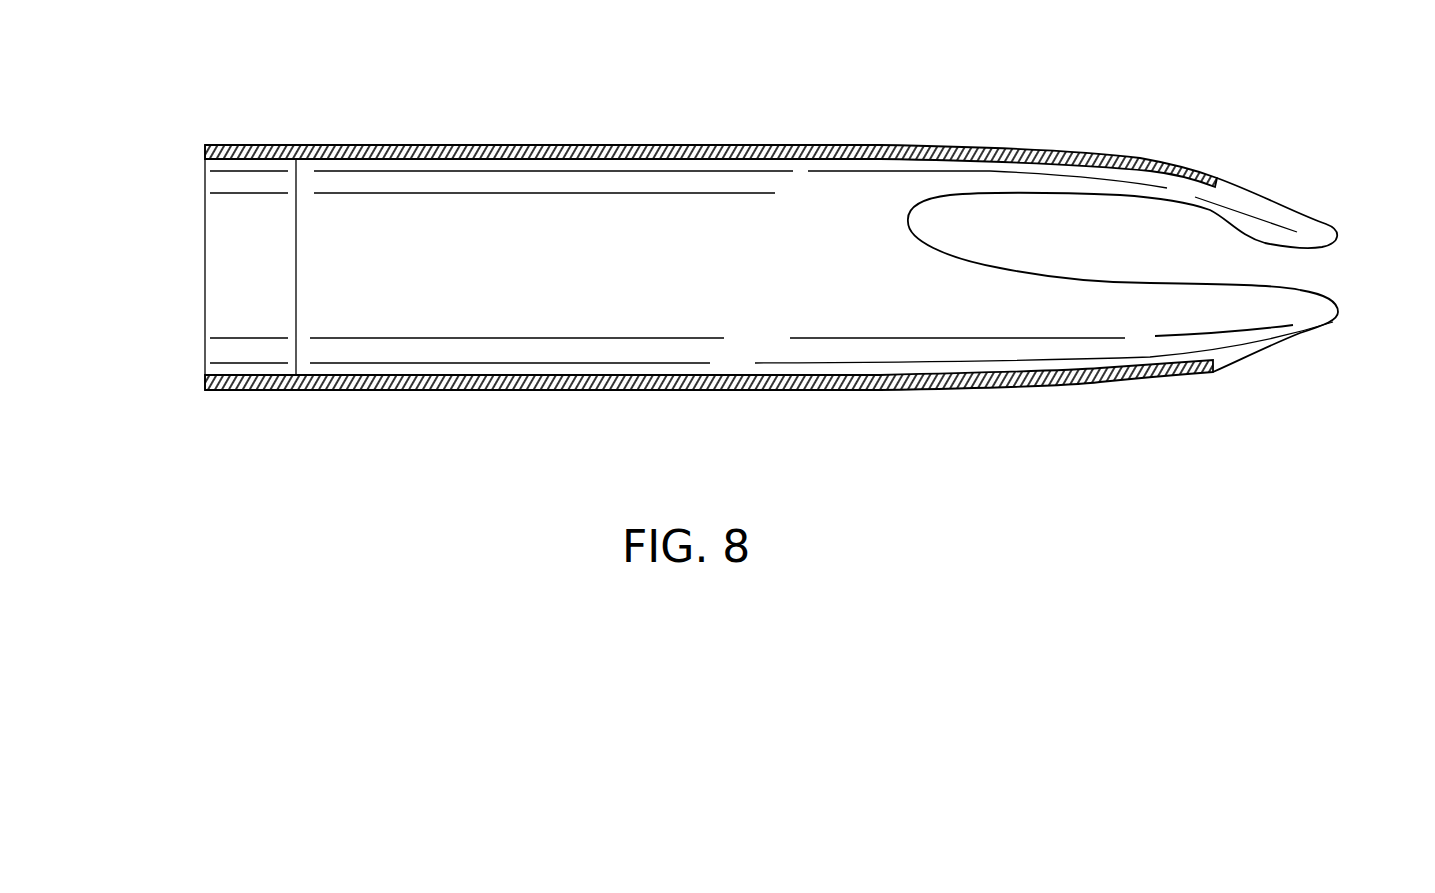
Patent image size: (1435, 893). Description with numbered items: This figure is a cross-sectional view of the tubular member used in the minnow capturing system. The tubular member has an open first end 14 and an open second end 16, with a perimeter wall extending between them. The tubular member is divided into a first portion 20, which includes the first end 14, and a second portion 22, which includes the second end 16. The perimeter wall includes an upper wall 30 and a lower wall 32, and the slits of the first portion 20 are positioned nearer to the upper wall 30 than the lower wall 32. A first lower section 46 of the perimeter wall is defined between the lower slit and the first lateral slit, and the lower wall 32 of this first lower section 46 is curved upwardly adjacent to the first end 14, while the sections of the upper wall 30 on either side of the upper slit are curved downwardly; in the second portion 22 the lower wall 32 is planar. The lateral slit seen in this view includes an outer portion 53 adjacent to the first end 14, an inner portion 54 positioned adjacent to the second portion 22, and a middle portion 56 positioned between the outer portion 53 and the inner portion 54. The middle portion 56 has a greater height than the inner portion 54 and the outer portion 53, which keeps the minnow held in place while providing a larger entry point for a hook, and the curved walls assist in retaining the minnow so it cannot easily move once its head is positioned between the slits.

The first end 14 is at (1340, 318).
The second end 16 is at (207, 348).
The first portion 20 is at (1094, 433).
The second portion 22 is at (388, 443).
The upper wall 30 is at (650, 145).
The lower wall 32 is at (490, 390).
The first lower section 46 is at (1255, 357).
The outer portion 53 is at (1297, 264).
The inner portion 54 is at (963, 213).
The middle portion 56 is at (1097, 225).